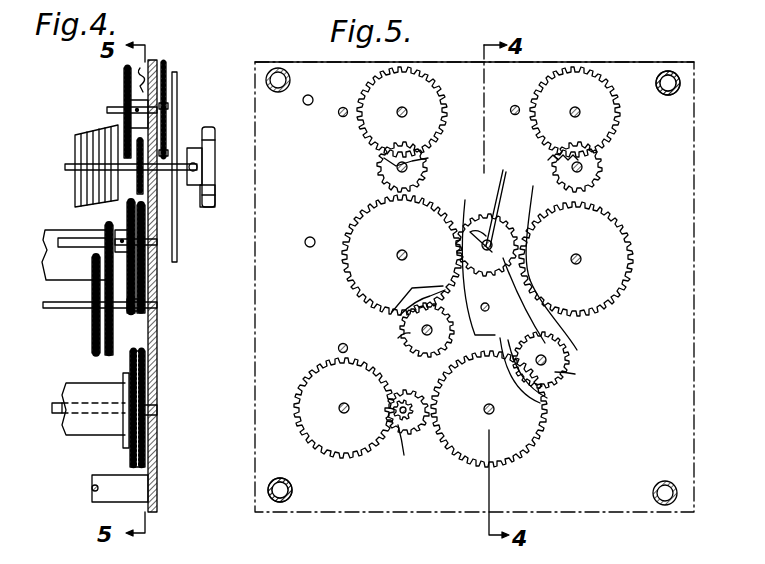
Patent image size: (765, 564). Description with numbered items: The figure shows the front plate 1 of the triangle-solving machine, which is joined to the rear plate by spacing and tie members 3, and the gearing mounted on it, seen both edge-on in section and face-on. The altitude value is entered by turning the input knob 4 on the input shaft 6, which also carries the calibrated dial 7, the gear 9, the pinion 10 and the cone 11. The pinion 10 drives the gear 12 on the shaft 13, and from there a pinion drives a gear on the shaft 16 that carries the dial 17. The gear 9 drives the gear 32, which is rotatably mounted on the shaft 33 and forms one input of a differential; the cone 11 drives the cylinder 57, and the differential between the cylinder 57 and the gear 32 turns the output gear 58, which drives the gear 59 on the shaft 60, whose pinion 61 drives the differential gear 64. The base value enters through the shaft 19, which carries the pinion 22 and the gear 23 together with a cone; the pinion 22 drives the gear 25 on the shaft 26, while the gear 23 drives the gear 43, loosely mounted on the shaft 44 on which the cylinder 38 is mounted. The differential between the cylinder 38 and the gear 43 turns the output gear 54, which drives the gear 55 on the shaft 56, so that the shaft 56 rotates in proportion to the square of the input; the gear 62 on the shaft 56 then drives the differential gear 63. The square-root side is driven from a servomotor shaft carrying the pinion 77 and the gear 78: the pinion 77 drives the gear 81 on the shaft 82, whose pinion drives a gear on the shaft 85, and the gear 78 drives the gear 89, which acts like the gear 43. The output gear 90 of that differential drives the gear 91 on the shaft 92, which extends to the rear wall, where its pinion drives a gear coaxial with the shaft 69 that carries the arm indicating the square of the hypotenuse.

In FIG. 4, the front plate 1 is at (153, 62).
In FIG. 5, the front plate 1 is at (258, 64).
In FIG. 4, the spacing and tie members 3 is at (92, 498).
In FIG. 5, the spacing and tie members 3 is at (682, 88).
In FIG. 4, the input knob 4 is at (224, 121).
In FIG. 4, the input shaft 6 is at (178, 160).
In FIG. 5, the input shaft 6 is at (583, 167).
In FIG. 4, the dial 7 is at (178, 90).
In FIG. 4, the gear 9 is at (145, 178).
In FIG. 5, the gear 9 is at (592, 163).
In FIG. 4, the pinion 10 is at (118, 234).
In FIG. 5, the pinion 10 is at (550, 160).
In FIG. 4, the cone 11 is at (86, 128).
In FIG. 4, the gear 12 is at (124, 74).
In FIG. 5, the gear 12 is at (618, 113).
In FIG. 4, the shaft 13 is at (107, 108).
In FIG. 5, the shaft 13 is at (580, 115).
In FIG. 5, the shaft 16 is at (515, 105).
In FIG. 4, the dial 17 is at (166, 64).
In FIG. 5, the shaft 19 is at (404, 456).
In FIG. 5, the pinion 22 is at (399, 422).
In FIG. 5, the gear 23 is at (418, 432).
In FIG. 5, the gear 25 is at (338, 352).
In FIG. 5, the shaft 26 is at (340, 412).
In FIG. 4, the gear 32 is at (142, 270).
In FIG. 5, the gear 32 is at (618, 214).
In FIG. 5, the shaft 33 is at (582, 260).
In FIG. 4, the cylinder 38 is at (66, 388).
In FIG. 4, the gear 43 is at (130, 462).
In FIG. 5, the gear 43 is at (540, 421).
In FIG. 4, the shaft 44 is at (58, 412).
In FIG. 5, the shaft 44 is at (493, 413).
In FIG. 4, the output gear 54 is at (124, 441).
In FIG. 5, the output gear 54 is at (541, 402).
In FIG. 5, the gear 55 is at (578, 351).
In FIG. 5, the shaft 56 is at (547, 361).
In FIG. 4, the cylinder 57 is at (62, 230).
In FIG. 4, the output gear 58 is at (135, 310).
In FIG. 5, the output gear 58 is at (519, 220).
In FIG. 4, the gear 59 is at (135, 262).
In FIG. 5, the gear 59 is at (486, 238).
In FIG. 5, the shaft 60 is at (462, 233).
In FIG. 4, the pinion 61 is at (110, 234).
In FIG. 5, the pinion 61 is at (500, 207).
In FIG. 5, the gear 62 is at (576, 374).
In FIG. 4, the differential gear 63 is at (92, 349).
In FIG. 5, the differential gear 63 is at (542, 322).
In FIG. 4, the differential gear 64 is at (110, 354).
In FIG. 5, the differential gear 64 is at (492, 295).
In FIG. 5, the shaft 69 is at (488, 311).
In FIG. 5, the pinion 77 is at (408, 165).
In FIG. 5, the gear 78 is at (428, 176).
In FIG. 5, the gear 81 is at (430, 81).
In FIG. 5, the shaft 82 is at (398, 115).
In FIG. 5, the shaft 85 is at (346, 108).
In FIG. 5, the gear 89 is at (356, 223).
In FIG. 5, the gear 90 is at (396, 316).
In FIG. 5, the gear 91 is at (400, 340).
In FIG. 5, the shaft 92 is at (427, 336).